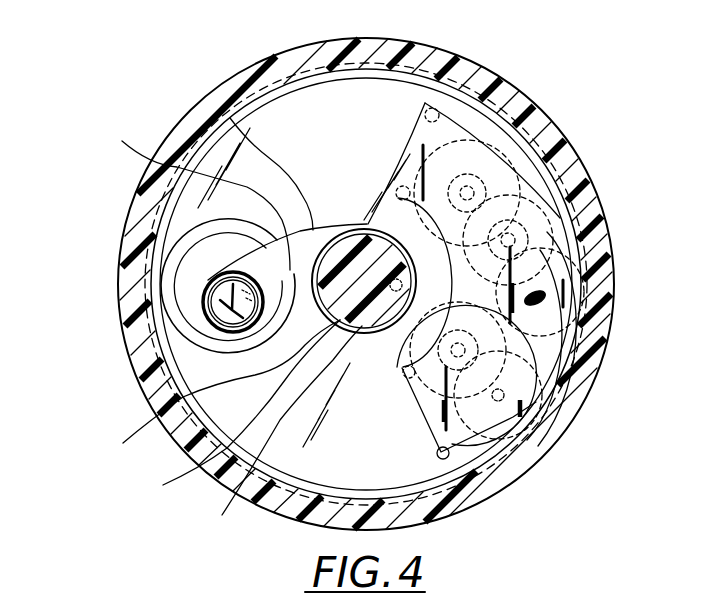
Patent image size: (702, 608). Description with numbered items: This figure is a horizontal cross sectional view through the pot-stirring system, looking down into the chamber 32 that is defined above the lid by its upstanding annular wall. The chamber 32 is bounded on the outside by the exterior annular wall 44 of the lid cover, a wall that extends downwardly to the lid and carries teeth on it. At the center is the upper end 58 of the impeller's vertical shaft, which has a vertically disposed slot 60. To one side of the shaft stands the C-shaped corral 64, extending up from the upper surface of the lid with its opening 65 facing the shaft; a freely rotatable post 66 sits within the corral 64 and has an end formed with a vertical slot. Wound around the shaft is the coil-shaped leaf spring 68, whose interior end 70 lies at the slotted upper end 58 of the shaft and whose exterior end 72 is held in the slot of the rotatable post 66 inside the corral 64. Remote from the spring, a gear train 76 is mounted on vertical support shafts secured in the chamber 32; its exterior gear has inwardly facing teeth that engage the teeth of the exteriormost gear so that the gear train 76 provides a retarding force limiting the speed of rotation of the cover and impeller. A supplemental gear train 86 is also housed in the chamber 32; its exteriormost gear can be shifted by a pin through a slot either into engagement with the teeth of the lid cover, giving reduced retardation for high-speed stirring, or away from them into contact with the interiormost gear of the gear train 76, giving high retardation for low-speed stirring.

The chamber 32 is at (365, 118).
The exterior annular wall 44 is at (527, 97).
The upper end 58 is at (242, 348).
The vertically disposed slot 60 is at (269, 439).
The C-shaped corral 64 is at (182, 232).
The opening 65 is at (222, 197).
The rotatable post 66 is at (203, 300).
The coil-shaped leaf spring 68 is at (230, 118).
The interior end 70 is at (229, 416).
The exterior end 72 is at (222, 313).
The gear train 76 is at (538, 353).
The supplemental gear train 86 is at (532, 218).